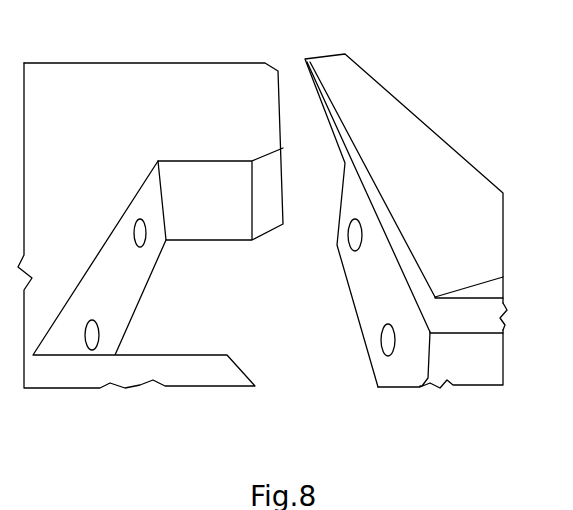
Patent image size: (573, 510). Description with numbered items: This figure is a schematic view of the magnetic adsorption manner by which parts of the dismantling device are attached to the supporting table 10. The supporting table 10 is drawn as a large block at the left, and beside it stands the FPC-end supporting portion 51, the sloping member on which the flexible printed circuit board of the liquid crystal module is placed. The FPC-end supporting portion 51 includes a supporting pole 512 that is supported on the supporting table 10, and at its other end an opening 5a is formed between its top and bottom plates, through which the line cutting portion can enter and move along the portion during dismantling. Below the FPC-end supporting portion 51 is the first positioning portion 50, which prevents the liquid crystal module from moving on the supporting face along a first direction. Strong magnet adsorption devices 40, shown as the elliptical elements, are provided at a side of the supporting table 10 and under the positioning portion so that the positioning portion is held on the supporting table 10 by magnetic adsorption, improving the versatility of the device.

The supporting table 10 is at (66, 63).
The strong magnet adsorption devices 40 is at (143, 238).
The FPC-end supporting portion 51 is at (355, 62).
The supporting pole 512 is at (307, 65).
The opening 5a is at (430, 306).
The first positioning portion 50 is at (455, 348).